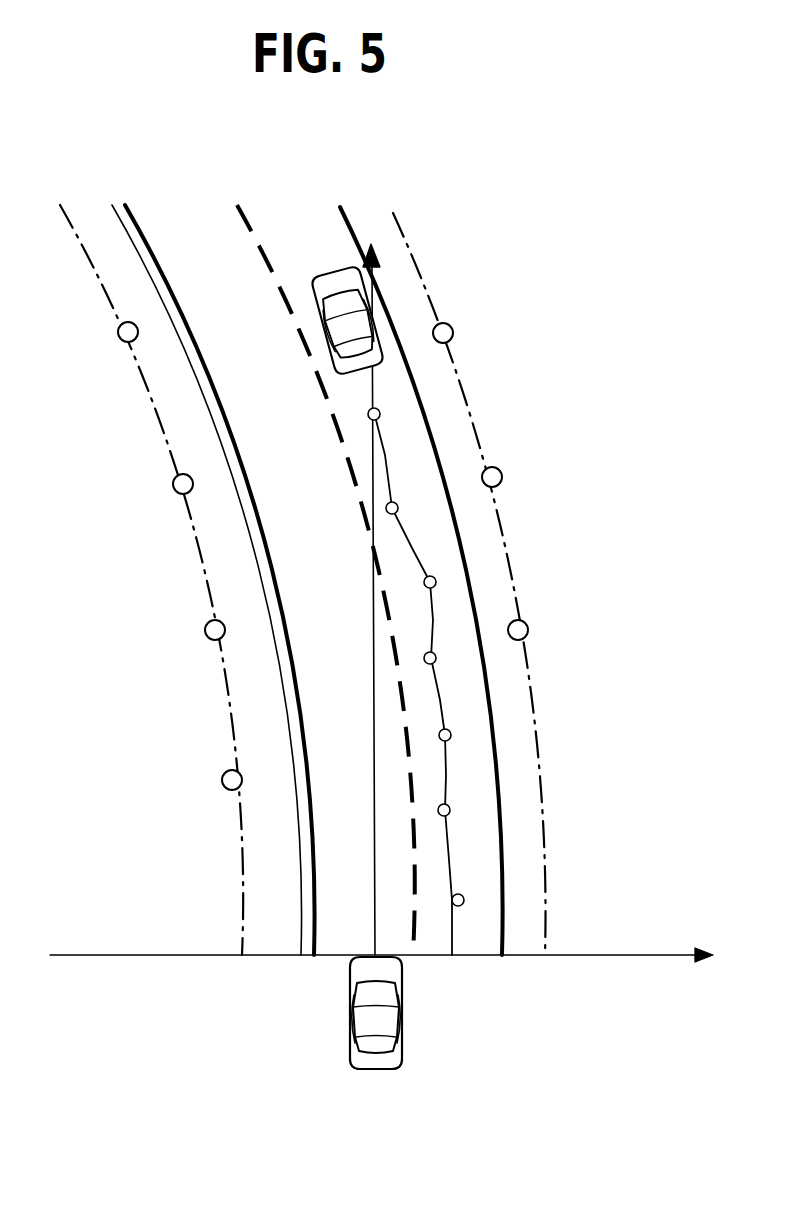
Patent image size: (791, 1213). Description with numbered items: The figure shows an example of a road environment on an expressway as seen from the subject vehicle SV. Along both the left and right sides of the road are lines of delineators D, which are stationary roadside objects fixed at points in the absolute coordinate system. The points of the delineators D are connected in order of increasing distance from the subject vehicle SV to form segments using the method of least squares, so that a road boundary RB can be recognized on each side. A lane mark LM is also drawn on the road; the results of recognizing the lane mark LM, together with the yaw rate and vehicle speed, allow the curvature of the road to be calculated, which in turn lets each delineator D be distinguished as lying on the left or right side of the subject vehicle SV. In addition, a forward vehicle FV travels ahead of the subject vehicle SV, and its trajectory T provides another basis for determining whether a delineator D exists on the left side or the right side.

The forward vehicle FV is at (379, 310).
The lane mark LM is at (456, 517).
The delineator D is at (172, 482).
The road boundary RB is at (217, 667).
The trajectory T is at (441, 678).
The subject vehicle SV is at (402, 1033).